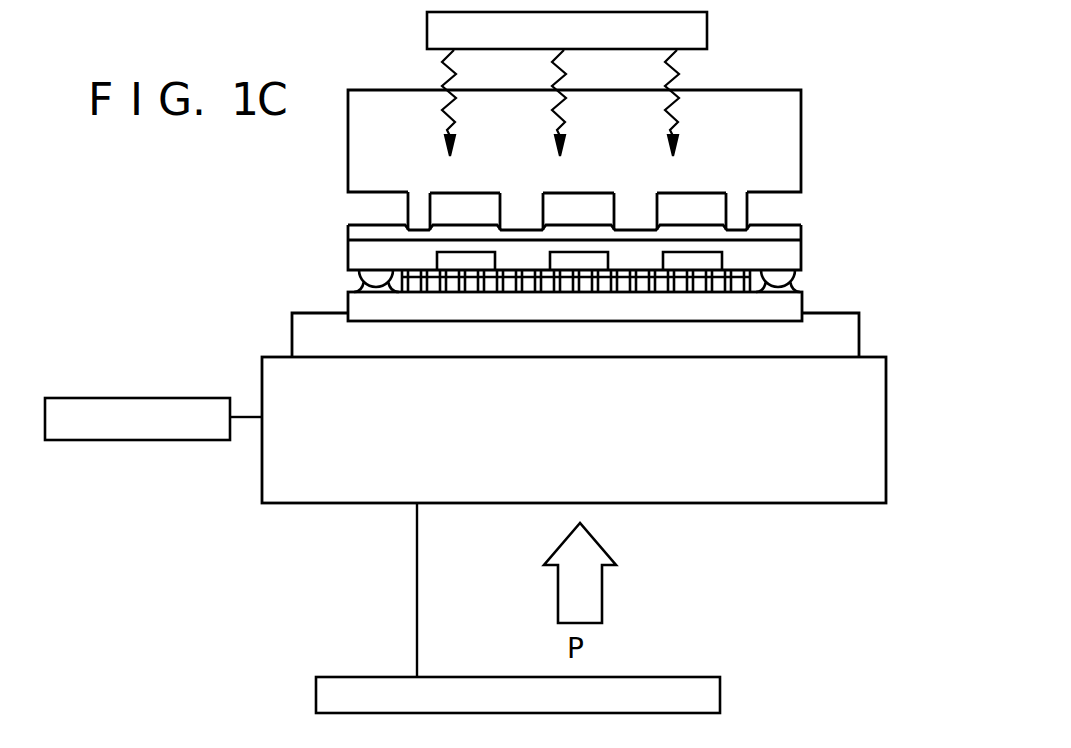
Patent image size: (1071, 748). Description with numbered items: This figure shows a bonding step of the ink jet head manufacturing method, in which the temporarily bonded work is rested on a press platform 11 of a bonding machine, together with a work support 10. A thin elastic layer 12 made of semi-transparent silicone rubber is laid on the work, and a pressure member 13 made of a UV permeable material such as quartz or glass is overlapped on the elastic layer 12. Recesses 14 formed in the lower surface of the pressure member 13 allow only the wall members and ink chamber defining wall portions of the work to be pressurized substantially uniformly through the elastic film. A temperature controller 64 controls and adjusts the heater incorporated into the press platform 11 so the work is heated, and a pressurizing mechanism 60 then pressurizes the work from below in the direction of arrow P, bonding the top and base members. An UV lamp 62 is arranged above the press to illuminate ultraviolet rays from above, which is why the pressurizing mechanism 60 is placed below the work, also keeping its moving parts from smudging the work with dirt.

The work support 10 is at (835, 334).
The press platform 11 is at (853, 391).
The elastic layer 12 is at (786, 233).
The pressure member 13 is at (780, 144).
The recesses 14 is at (438, 208).
The pressurizing mechanism 60 is at (720, 694).
The UV lamp 62 is at (707, 27).
The temperature controller 64 is at (80, 398).